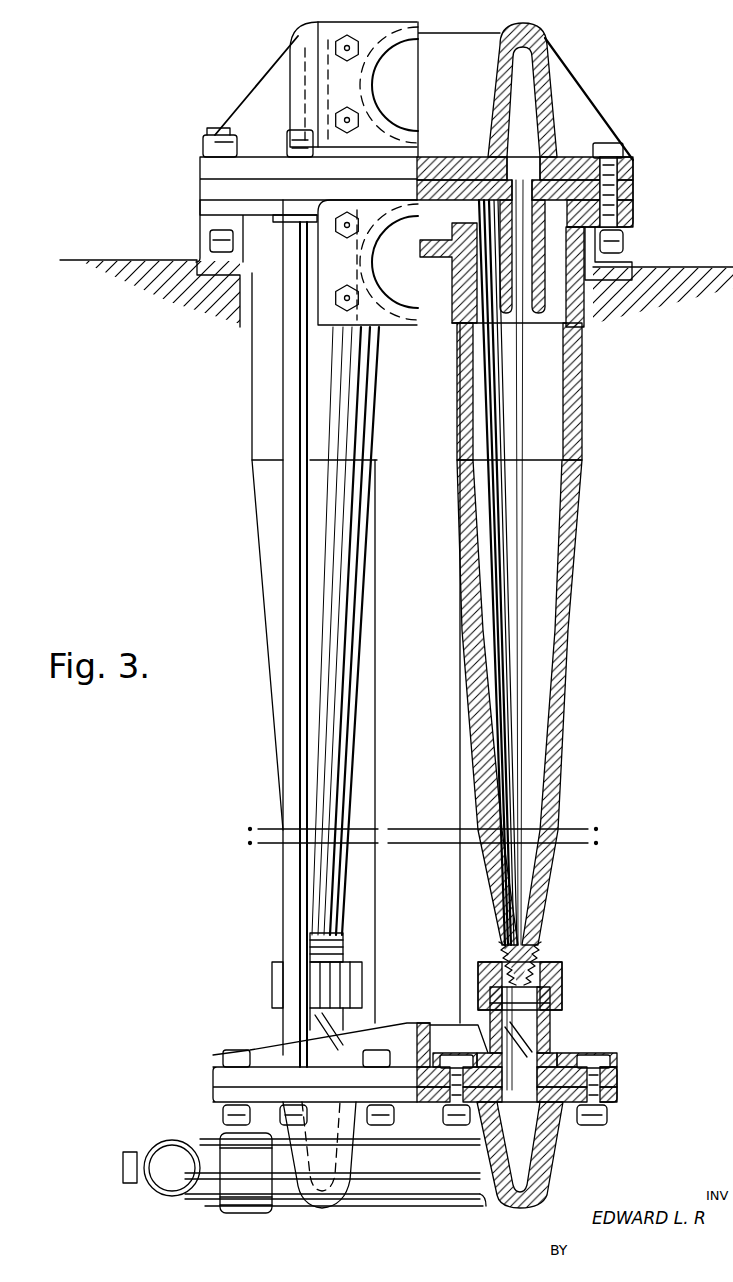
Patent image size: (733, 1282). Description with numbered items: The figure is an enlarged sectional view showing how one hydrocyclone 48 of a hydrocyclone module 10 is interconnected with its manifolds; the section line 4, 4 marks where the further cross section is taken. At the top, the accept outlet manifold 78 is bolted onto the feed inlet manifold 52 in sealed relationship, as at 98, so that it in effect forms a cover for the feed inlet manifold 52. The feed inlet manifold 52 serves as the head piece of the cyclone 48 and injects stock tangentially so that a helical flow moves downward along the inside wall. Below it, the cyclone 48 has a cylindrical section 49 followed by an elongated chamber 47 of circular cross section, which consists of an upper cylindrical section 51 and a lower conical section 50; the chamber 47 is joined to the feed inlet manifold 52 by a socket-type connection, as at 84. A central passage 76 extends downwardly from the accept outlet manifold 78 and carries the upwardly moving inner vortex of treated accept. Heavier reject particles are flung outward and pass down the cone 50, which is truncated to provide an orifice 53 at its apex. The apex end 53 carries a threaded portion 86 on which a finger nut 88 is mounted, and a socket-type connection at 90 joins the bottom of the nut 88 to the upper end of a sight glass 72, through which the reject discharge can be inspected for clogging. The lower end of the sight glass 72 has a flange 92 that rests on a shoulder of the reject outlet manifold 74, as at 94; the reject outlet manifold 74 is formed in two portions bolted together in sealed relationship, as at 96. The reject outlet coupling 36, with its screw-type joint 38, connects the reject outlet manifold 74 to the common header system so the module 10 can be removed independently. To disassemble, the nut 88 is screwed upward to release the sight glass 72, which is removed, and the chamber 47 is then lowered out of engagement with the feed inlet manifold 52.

The hydrocyclone module 10 is at (676, 128).
The section line 4- 4 is at (472, 15).
The accept outlet manifold 78 is at (541, 96).
The sealed bolted connection 98 is at (636, 173).
The feed inlet manifold 52 is at (388, 280).
The central passage 76 is at (546, 305).
The cylindrical section 49 is at (584, 300).
The socket-type connection 84 is at (566, 318).
The upper cylindrical section 51 is at (584, 418).
The elongated chamber 47 is at (594, 496).
The lower conical section 50 is at (569, 552).
The hydrocyclone 48 is at (446, 588).
The apex orifice 53 is at (480, 973).
The threaded portion 86 is at (540, 948).
The finger nut 88 is at (559, 980).
The socket-type connection 90 is at (550, 1003).
The sight glass 72 is at (551, 1028).
The flange 92 is at (556, 1063).
The shoulder seat 94 is at (578, 1096).
The bolted sealed joint 96 is at (610, 1100).
The reject outlet manifold 74 is at (544, 1168).
The reject outlet coupling 36 is at (206, 1197).
The screw-type joint 38 is at (241, 1208).